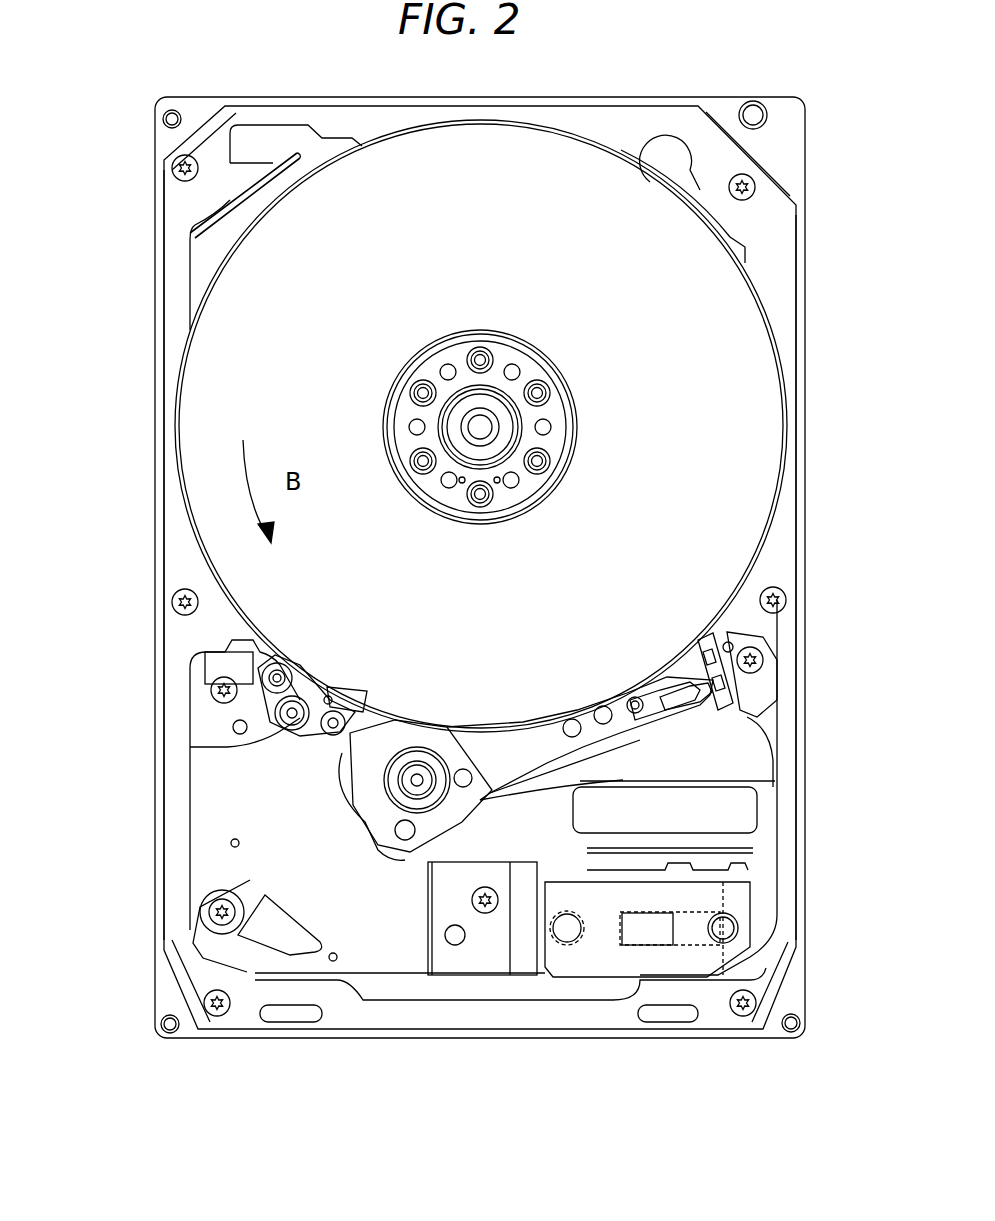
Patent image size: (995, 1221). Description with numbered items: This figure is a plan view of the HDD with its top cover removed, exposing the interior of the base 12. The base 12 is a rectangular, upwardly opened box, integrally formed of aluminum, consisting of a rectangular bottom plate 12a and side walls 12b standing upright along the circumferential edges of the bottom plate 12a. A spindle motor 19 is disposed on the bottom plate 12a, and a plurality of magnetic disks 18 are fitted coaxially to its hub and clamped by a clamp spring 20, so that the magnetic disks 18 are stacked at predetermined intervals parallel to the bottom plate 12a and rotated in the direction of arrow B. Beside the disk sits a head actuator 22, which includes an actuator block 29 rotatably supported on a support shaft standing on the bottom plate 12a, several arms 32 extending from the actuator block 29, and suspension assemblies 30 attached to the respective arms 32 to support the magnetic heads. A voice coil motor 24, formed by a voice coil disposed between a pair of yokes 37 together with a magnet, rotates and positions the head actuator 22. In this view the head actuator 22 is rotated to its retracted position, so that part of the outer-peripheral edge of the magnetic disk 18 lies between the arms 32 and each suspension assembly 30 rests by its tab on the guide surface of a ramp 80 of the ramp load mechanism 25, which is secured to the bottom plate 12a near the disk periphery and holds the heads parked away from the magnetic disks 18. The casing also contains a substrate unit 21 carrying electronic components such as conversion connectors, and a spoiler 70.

The base 12 is at (150, 682).
The bottom plate 12a is at (727, 762).
The side walls 12b is at (365, 97).
The magnetic disk 18 is at (750, 352).
The spindle motor 19 is at (482, 406).
The clamp spring 20 is at (577, 425).
The substrate unit 21 is at (668, 958).
The head actuator 22 is at (526, 745).
The voice coil motor 24 is at (220, 843).
The ramp load mechanism 25 is at (743, 703).
The actuator block 29 is at (393, 738).
The suspension assembly 30 is at (653, 696).
The arm 32 is at (547, 730).
The yoke 37 is at (215, 795).
The spoiler 70 is at (322, 682).
The ramp 80 is at (712, 700).